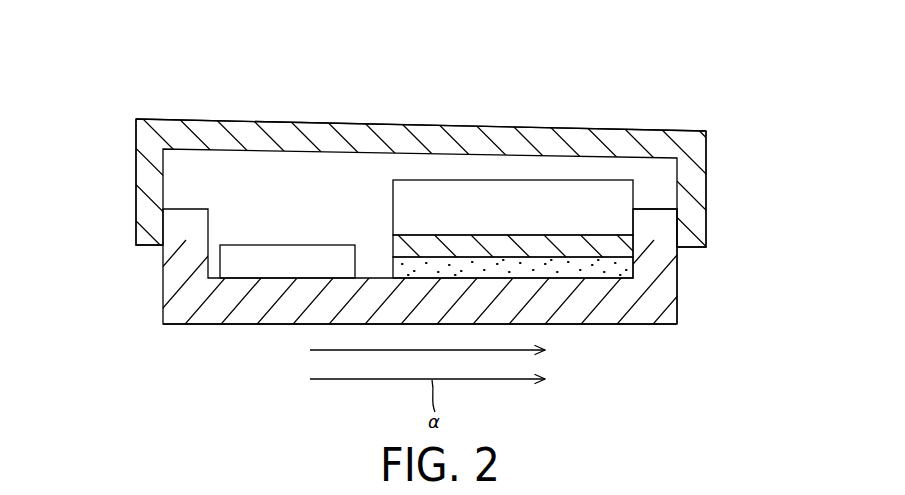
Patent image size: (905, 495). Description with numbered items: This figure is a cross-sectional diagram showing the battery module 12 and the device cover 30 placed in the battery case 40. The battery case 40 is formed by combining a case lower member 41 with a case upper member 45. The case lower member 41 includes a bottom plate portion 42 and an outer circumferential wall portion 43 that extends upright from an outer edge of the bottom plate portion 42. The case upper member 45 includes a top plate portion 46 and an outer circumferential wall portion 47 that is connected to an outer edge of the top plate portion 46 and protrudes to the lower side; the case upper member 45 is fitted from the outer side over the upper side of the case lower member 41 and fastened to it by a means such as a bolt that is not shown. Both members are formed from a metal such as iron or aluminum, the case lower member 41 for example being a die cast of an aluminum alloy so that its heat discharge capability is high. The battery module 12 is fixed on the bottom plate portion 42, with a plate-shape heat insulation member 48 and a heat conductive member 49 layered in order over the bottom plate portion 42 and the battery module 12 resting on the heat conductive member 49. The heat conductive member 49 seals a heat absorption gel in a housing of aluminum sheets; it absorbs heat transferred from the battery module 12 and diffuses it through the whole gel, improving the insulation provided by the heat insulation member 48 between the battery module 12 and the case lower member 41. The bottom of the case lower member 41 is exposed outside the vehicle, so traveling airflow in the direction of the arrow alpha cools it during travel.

The battery module 12 is at (550, 180).
The device cover 30 is at (268, 244).
The battery case 40 is at (421, 124).
The case lower member 41 is at (678, 305).
The bottom plate portion 42 is at (627, 326).
The outer circumferential wall portion 43 is at (678, 257).
The case upper member 45 is at (707, 168).
The top plate portion 46 is at (282, 118).
The outer circumferential wall portion 47 is at (135, 197).
The heat insulation member 48 is at (563, 265).
The heat conductive member 49 is at (393, 247).